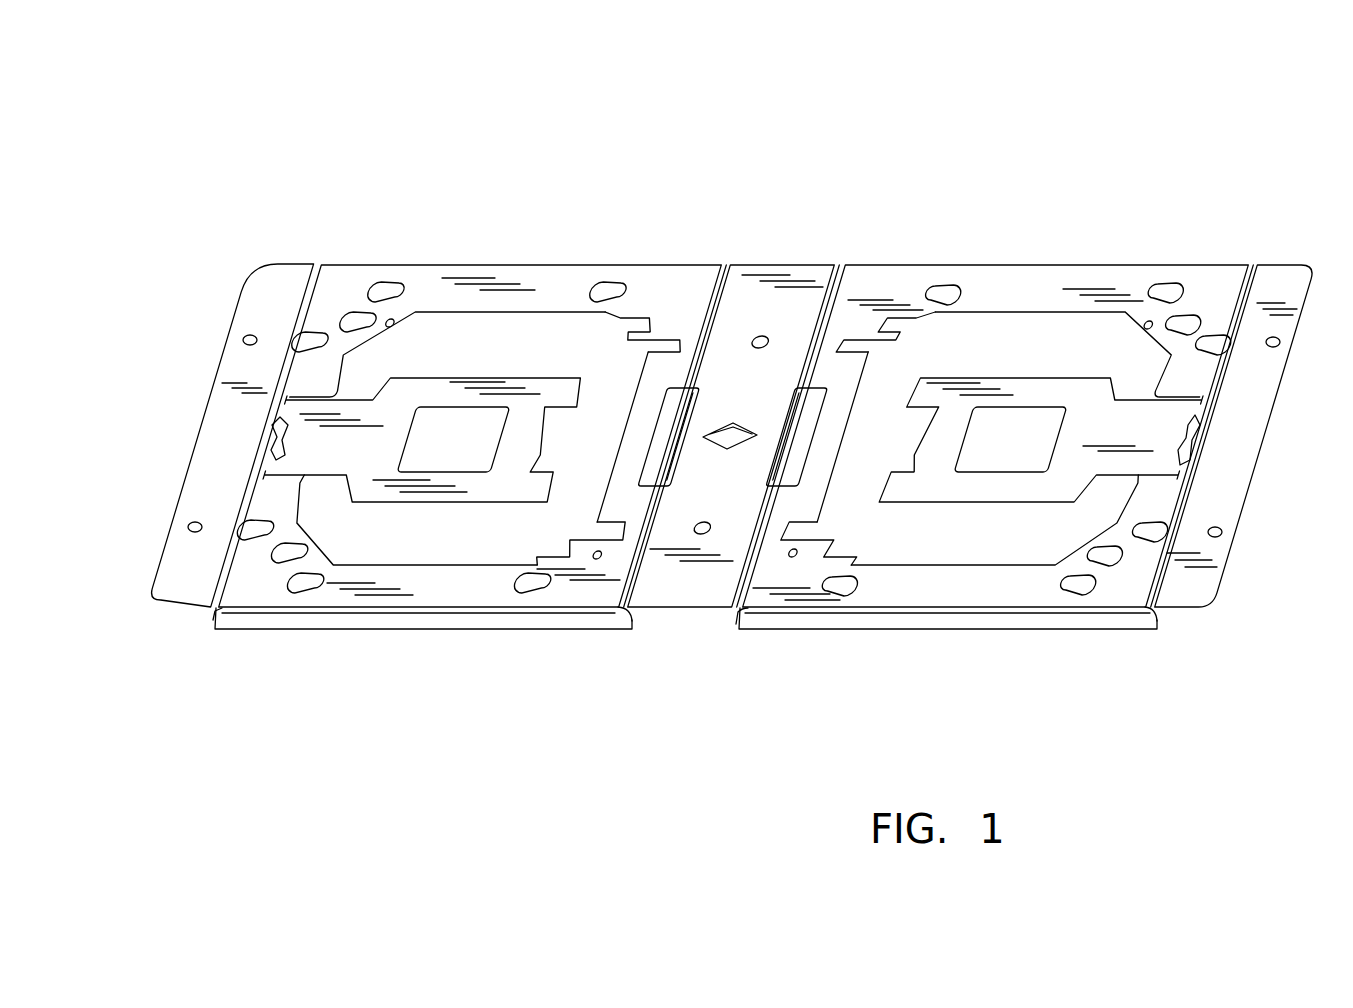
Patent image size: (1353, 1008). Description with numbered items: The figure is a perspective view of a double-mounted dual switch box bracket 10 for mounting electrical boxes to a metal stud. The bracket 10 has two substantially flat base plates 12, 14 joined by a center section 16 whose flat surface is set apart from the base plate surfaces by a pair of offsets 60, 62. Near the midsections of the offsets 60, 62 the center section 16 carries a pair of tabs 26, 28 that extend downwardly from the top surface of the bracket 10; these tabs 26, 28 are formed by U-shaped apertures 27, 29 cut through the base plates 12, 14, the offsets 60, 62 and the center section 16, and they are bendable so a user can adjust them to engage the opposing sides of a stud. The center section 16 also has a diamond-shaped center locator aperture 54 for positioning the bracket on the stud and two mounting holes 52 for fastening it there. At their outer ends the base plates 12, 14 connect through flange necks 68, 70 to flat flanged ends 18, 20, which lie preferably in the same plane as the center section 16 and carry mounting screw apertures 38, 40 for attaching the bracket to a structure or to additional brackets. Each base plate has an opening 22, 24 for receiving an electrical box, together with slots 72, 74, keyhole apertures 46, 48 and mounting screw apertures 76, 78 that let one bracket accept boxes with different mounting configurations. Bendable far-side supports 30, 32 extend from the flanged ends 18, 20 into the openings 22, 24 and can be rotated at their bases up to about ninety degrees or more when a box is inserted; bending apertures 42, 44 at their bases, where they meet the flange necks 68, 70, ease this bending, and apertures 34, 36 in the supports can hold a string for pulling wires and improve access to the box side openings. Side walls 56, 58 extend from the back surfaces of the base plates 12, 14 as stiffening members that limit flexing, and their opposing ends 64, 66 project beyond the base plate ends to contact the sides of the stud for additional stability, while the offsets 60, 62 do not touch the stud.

The double-mounted dual switch box bracket 10 is at (283, 203).
The base plate 12 is at (560, 266).
The base plate 14 is at (1003, 290).
The center section 16 is at (712, 612).
The flanged end 18 is at (230, 435).
The flanged end 20 is at (1198, 518).
The opening 22 is at (462, 359).
The opening 24 is at (1018, 357).
The tab 26 is at (680, 435).
The U-shaped aperture 27 is at (670, 412).
The tab 28 is at (797, 435).
The U-shaped aperture 29 is at (800, 460).
The far-side support 30 is at (325, 452).
The far-side support 32 is at (1126, 440).
The aperture 34 is at (436, 456).
The aperture 36 is at (993, 449).
The mounting screw aperture 38 is at (250, 335).
The mounting screw aperture 40 is at (1273, 337).
The bending aperture 42 is at (280, 428).
The bending aperture 44 is at (1193, 435).
The keyhole aperture 46 is at (395, 287).
The keyhole aperture 48 is at (1173, 290).
The mounting hole 52 is at (762, 338).
The center locator aperture 54 is at (730, 432).
The side wall 56 is at (237, 623).
The side wall 58 is at (1110, 632).
The offset 60 is at (730, 263).
The offset 62 is at (845, 265).
The opposing end 64 is at (215, 632).
The opposing end 66 is at (737, 633).
The flange neck 68 is at (320, 262).
The flange neck 70 is at (1248, 262).
The slot 72 is at (650, 336).
The slot 74 is at (880, 348).
The mounting screw aperture 76 is at (393, 322).
The mounting screw aperture 78 is at (1148, 320).